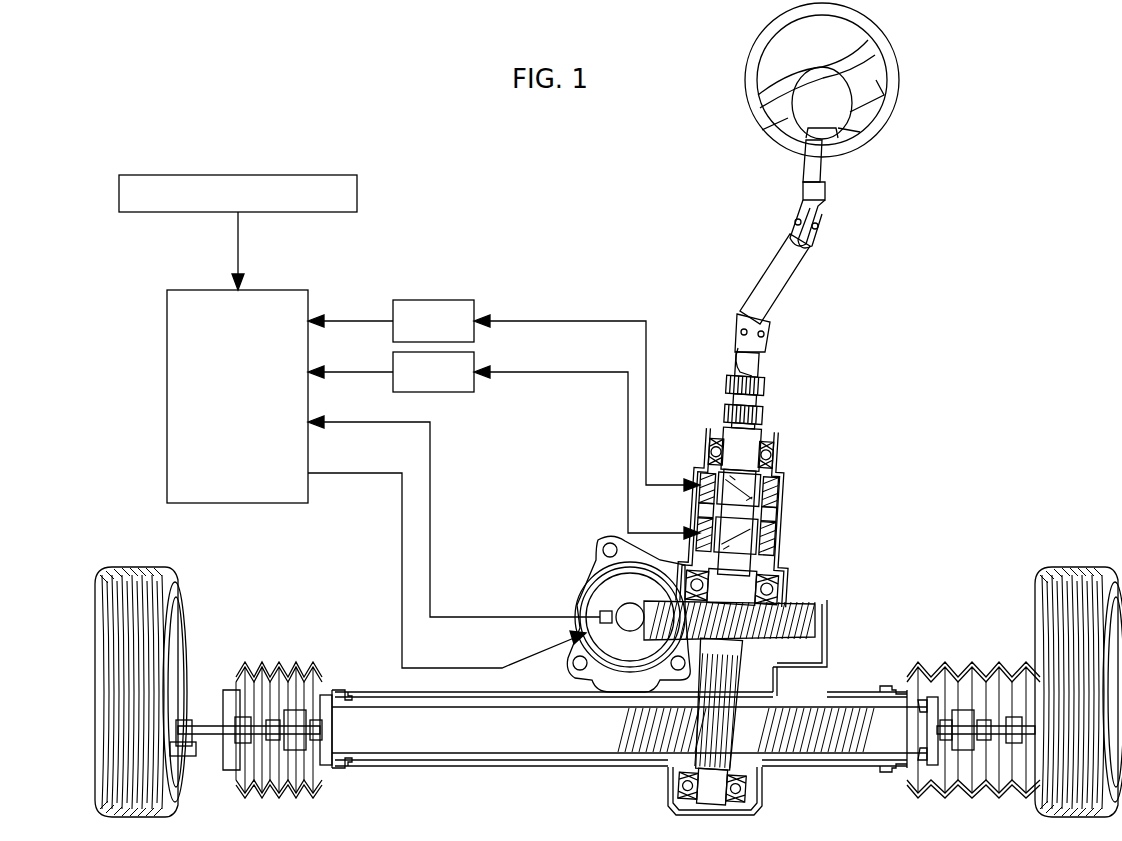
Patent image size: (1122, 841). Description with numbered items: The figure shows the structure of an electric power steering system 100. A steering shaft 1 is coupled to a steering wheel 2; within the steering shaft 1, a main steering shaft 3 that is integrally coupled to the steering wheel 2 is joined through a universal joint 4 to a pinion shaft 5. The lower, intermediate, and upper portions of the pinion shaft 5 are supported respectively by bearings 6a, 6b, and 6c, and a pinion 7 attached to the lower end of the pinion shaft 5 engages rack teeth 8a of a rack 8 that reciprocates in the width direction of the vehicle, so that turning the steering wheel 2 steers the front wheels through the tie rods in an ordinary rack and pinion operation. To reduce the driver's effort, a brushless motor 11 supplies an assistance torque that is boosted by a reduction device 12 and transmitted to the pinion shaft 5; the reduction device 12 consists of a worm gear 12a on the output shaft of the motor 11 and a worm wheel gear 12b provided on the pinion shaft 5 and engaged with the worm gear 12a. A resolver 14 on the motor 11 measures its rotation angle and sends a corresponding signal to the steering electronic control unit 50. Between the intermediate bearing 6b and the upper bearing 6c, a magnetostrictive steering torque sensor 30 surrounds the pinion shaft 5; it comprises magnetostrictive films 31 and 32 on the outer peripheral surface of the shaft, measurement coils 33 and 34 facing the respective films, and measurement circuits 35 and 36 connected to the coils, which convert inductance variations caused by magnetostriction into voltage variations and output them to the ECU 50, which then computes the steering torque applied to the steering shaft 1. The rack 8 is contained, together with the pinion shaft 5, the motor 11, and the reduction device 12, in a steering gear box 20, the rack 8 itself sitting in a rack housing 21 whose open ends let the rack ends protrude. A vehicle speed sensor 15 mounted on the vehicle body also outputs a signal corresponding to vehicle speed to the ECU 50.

The electric power steering system 100 is at (893, 366).
The steering shaft 1 is at (784, 322).
The steering wheel 2 is at (900, 75).
The main steering shaft 3 is at (824, 165).
The universal joint 4 is at (768, 276).
The pinion shaft 5 is at (744, 572).
The bearing 6a is at (760, 796).
The bearing 6b is at (780, 586).
The bearing 6c is at (764, 462).
The pinion 7 is at (762, 770).
The rack 8 is at (628, 713).
The rack teeth 8a is at (636, 750).
The brushless motor 11 is at (625, 606).
The reduction device 12 is at (605, 588).
The worm gear 12a is at (623, 600).
The worm wheel gear 12b is at (816, 622).
The resolver 14 is at (600, 614).
The vehicle speed sensor 15 is at (358, 190).
The steering gear box 20 is at (828, 667).
The rack housing 21 is at (412, 758).
The magnetostrictive steering torque sensor 30 is at (754, 501).
The magnetostrictive film 31 is at (754, 480).
The magnetostrictive film 32 is at (748, 550).
The measurement coil 33 is at (710, 470).
The measurement coil 34 is at (704, 526).
The measurement circuit 35 is at (446, 300).
The measurement circuit 36 is at (450, 392).
The steering electronic control unit 50 is at (280, 290).